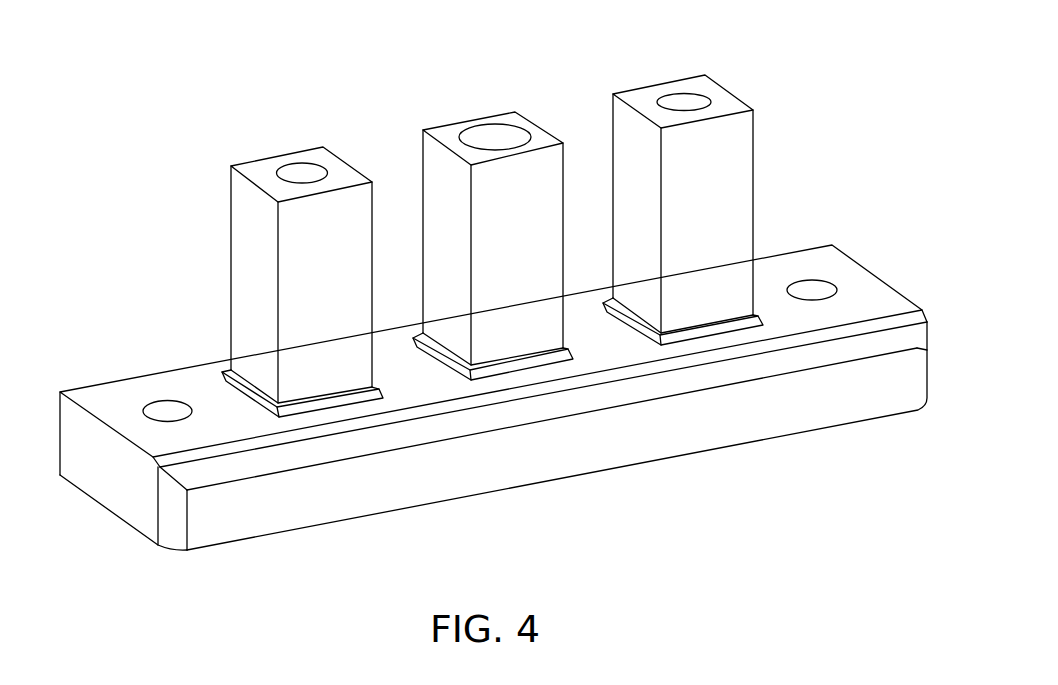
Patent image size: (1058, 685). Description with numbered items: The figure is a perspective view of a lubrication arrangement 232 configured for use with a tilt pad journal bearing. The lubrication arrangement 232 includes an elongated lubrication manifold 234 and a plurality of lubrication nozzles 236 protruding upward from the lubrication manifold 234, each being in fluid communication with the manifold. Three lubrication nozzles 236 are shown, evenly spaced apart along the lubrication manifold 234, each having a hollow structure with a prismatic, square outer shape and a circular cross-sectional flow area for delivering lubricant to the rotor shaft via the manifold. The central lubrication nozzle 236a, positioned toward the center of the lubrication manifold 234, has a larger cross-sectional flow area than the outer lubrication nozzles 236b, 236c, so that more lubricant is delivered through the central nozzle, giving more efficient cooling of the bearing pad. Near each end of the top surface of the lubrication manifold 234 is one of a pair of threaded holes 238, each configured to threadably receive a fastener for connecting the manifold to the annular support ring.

The lubrication arrangement 232 is at (835, 82).
The lubrication manifold 234 is at (546, 439).
The lubrication nozzles 236 is at (180, 305).
The central lubrication nozzle 236a is at (492, 138).
The outer lubrication nozzle 236b is at (300, 175).
The outer lubrication nozzle 236c is at (682, 103).
The threaded holes 238 is at (167, 411).